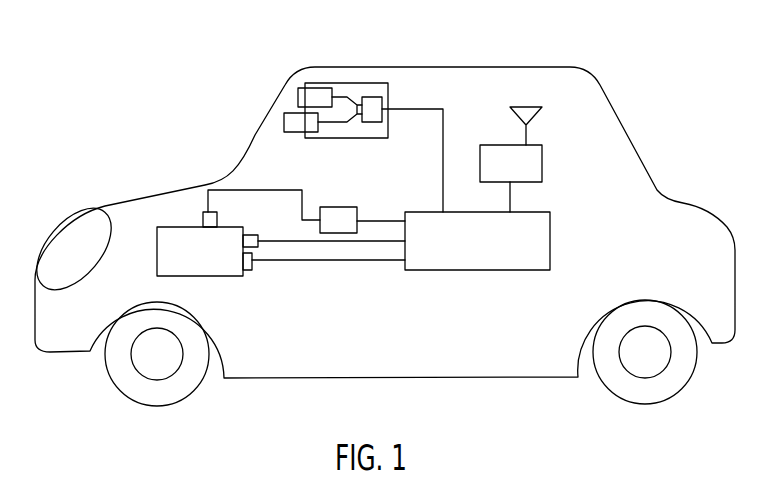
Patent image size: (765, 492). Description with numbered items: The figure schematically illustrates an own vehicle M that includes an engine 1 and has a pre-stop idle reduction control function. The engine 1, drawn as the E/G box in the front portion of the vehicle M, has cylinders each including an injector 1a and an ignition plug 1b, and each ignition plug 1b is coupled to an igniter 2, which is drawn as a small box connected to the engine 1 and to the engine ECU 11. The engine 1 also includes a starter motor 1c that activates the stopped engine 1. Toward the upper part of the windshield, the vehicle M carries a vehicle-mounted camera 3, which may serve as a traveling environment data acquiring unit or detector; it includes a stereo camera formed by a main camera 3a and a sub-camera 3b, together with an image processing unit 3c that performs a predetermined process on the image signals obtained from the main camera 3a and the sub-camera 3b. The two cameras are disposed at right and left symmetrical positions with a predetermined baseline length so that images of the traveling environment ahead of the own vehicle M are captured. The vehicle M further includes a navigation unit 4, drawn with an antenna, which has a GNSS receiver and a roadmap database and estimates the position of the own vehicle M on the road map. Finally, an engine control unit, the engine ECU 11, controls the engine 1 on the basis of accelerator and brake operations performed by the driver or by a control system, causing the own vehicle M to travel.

The own vehicle M is at (532, 66).
The engine 1 is at (163, 227).
The injector 1a is at (257, 232).
The ignition plug 1b is at (203, 218).
The starter motor 1c is at (250, 272).
The igniter 2 is at (340, 207).
The vehicle-mounted camera 3 is at (329, 112).
The main camera 3a is at (298, 93).
The sub-camera 3b is at (284, 118).
The image processing unit 3c is at (371, 97).
The navigation unit 4 is at (542, 160).
The engine ECU 11 is at (477, 270).